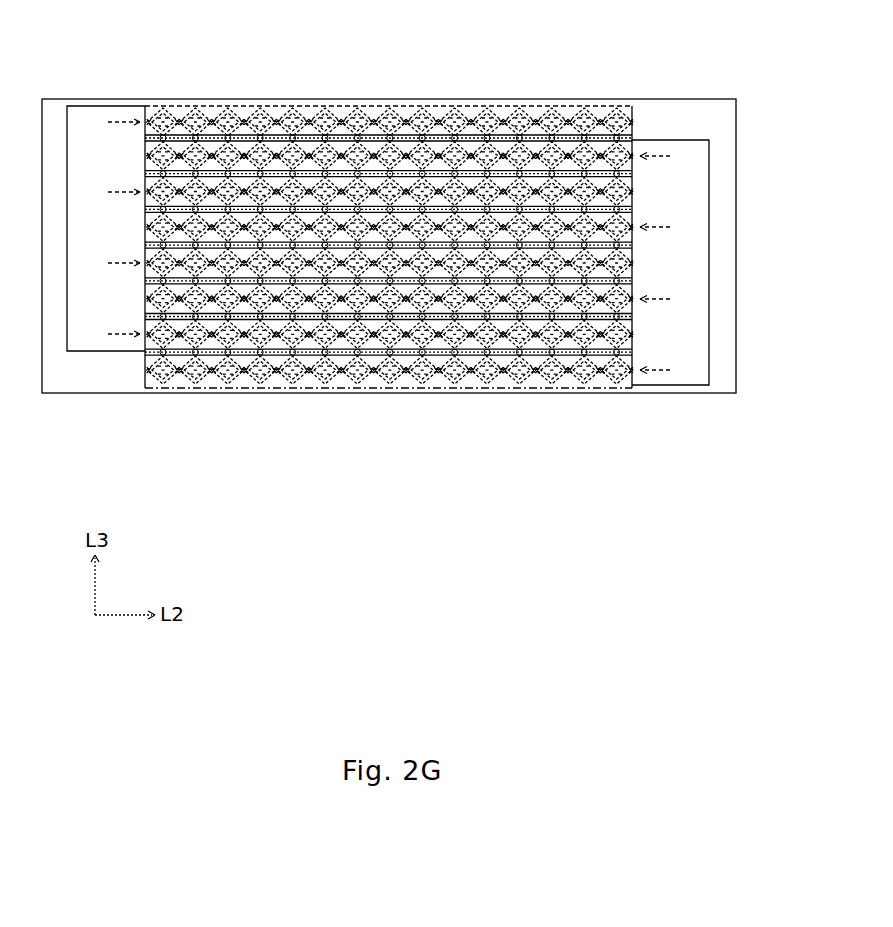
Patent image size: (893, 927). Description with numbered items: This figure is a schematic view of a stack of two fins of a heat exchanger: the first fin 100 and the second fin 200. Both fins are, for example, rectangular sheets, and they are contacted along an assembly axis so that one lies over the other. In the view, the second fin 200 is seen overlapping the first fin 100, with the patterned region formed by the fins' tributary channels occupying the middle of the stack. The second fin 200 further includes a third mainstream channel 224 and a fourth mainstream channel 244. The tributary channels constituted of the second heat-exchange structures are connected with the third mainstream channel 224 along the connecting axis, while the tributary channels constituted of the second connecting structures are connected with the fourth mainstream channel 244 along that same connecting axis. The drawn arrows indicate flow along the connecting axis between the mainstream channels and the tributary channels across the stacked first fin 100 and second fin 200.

The first fin 100 is at (452, 118).
The second fin 200 is at (398, 122).
The third mainstream channel 224 is at (84, 124).
The fourth mainstream channel 244 is at (693, 166).